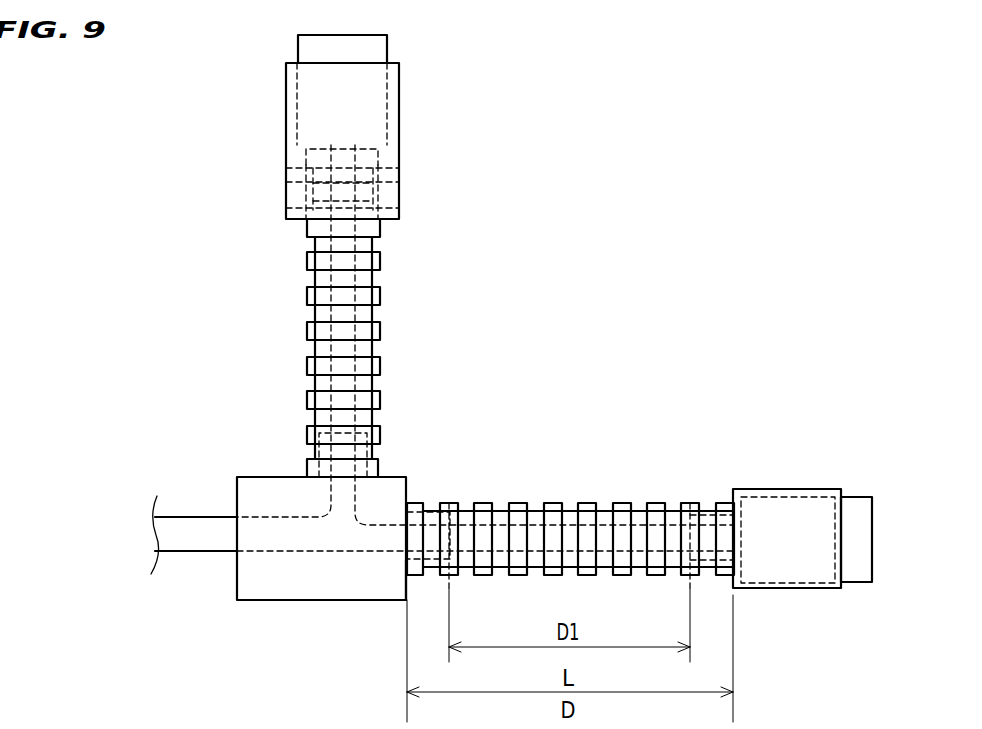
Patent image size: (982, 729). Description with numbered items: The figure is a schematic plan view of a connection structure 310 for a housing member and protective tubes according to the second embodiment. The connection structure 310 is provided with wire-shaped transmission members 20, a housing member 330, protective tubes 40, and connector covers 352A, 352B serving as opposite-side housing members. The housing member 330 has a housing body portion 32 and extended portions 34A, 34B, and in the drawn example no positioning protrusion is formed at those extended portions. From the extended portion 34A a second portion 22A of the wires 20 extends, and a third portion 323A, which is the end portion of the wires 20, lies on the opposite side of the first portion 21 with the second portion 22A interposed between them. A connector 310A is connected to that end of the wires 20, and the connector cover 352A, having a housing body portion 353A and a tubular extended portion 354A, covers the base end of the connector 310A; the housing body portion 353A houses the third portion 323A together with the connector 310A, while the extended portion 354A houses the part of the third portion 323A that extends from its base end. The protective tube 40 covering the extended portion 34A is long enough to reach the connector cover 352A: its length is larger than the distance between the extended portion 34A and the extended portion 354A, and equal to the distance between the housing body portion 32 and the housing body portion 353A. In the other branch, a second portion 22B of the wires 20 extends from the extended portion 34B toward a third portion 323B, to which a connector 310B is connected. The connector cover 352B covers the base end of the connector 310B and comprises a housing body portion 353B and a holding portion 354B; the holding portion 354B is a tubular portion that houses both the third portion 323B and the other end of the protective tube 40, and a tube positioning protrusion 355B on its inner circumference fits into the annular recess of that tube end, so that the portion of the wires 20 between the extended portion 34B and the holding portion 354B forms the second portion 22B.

The connector 310B is at (388, 46).
The connector cover 352B is at (399, 80).
The housing body portion 353B is at (399, 124).
The holding portion 354B is at (385, 170).
The tube positioning protrusion 355B is at (375, 187).
The third portion 323B is at (298, 156).
The second portion 22B is at (358, 312).
The protective tube 40 is at (380, 367).
The extended portion 34B is at (368, 452).
The connection structure 310 is at (468, 399).
The wire-shaped transmission members 20 is at (197, 569).
The first portion 21 is at (322, 552).
The housing member 330 is at (333, 600).
The housing body portion 32 is at (387, 600).
The extended portion 34A is at (431, 575).
The second portion 22A is at (538, 511).
The extended portion 354A is at (703, 510).
The third portion 323A is at (722, 510).
The connector cover 352A is at (783, 489).
The connector 310A is at (855, 497).
The housing body portion 353A is at (787, 588).